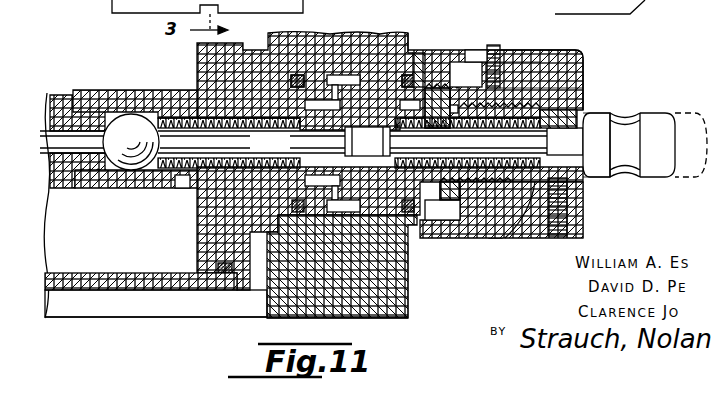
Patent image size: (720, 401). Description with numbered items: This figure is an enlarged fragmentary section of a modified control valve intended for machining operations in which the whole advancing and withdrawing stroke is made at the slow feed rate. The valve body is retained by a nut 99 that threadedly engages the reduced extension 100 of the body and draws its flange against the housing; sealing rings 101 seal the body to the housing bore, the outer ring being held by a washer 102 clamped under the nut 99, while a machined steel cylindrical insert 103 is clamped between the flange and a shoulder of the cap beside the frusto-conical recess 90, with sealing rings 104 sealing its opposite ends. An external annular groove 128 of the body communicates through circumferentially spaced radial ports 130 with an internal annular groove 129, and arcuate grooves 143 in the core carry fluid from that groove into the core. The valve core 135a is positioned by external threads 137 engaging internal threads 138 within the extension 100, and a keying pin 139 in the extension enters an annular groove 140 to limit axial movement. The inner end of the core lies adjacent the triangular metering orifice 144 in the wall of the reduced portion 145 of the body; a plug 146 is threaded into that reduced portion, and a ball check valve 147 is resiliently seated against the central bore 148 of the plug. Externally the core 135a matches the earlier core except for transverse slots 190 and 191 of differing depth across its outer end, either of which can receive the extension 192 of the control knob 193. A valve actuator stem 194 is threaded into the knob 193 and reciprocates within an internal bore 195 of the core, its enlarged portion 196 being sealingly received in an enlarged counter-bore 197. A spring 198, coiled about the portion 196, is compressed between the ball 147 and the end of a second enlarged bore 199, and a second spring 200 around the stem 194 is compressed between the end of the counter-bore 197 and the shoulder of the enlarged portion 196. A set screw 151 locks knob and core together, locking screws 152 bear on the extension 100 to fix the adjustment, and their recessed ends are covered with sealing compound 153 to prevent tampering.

The frusto-conical recess 90 is at (408, 287).
The nut 99 is at (440, 70).
The reduced extension 100 is at (558, 60).
The sealing rings 101 is at (417, 53).
The washer 102 is at (427, 52).
The cylindrical insert 103 is at (118, 273).
The sealing rings 104 is at (214, 274).
The annular groove 128 is at (400, 76).
The internal annular groove 129 is at (309, 67).
The radial ports 130 is at (340, 75).
The valve core 135a is at (508, 238).
The external threads 137 is at (585, 80).
The internal threads 138 is at (522, 77).
The keying pin 139 is at (460, 62).
The annular groove 140 is at (430, 160).
The arcuate grooves 143 is at (248, 108).
The metering orifice 144 is at (178, 193).
The reduced portion 145 is at (106, 90).
The plug 146 is at (56, 190).
The ball check valve 147 is at (120, 175).
The central bore 148 is at (68, 95).
The set screw 151 is at (585, 240).
The locking screws 152 is at (503, 60).
The sealing compound 153 is at (497, 45).
The transverse slot 190 is at (600, 177).
The transverse slot 191 is at (590, 117).
The extension 192 is at (620, 115).
The control knob 193 is at (662, 112).
The valve actuator stem 194 is at (585, 197).
The internal bore 195 is at (537, 112).
The enlarged portion 196 is at (290, 150).
The counter-bore 197 is at (318, 162).
The spring 198 is at (175, 118).
The second enlarged bore 199 is at (160, 180).
The second spring 200 is at (436, 220).